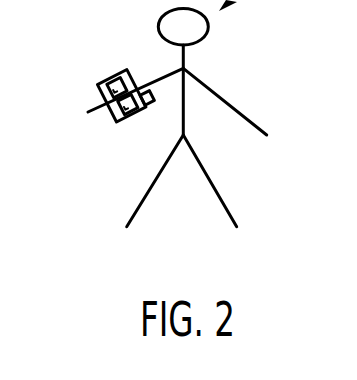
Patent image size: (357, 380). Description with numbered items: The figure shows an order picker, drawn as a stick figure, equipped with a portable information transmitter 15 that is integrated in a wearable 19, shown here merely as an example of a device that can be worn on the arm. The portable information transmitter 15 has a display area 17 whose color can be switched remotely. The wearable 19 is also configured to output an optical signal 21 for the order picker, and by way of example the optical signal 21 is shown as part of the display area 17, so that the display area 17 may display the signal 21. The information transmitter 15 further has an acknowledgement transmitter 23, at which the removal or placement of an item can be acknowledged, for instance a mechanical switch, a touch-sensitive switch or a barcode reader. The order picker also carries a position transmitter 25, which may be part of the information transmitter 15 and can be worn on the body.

The portable information transmitter 15 is at (125, 76).
The display area 17 is at (114, 77).
The wearable 19 is at (102, 112).
The optical signal 21 is at (100, 100).
The acknowledgement transmitter 23 is at (127, 124).
The position transmitter 25 is at (154, 107).